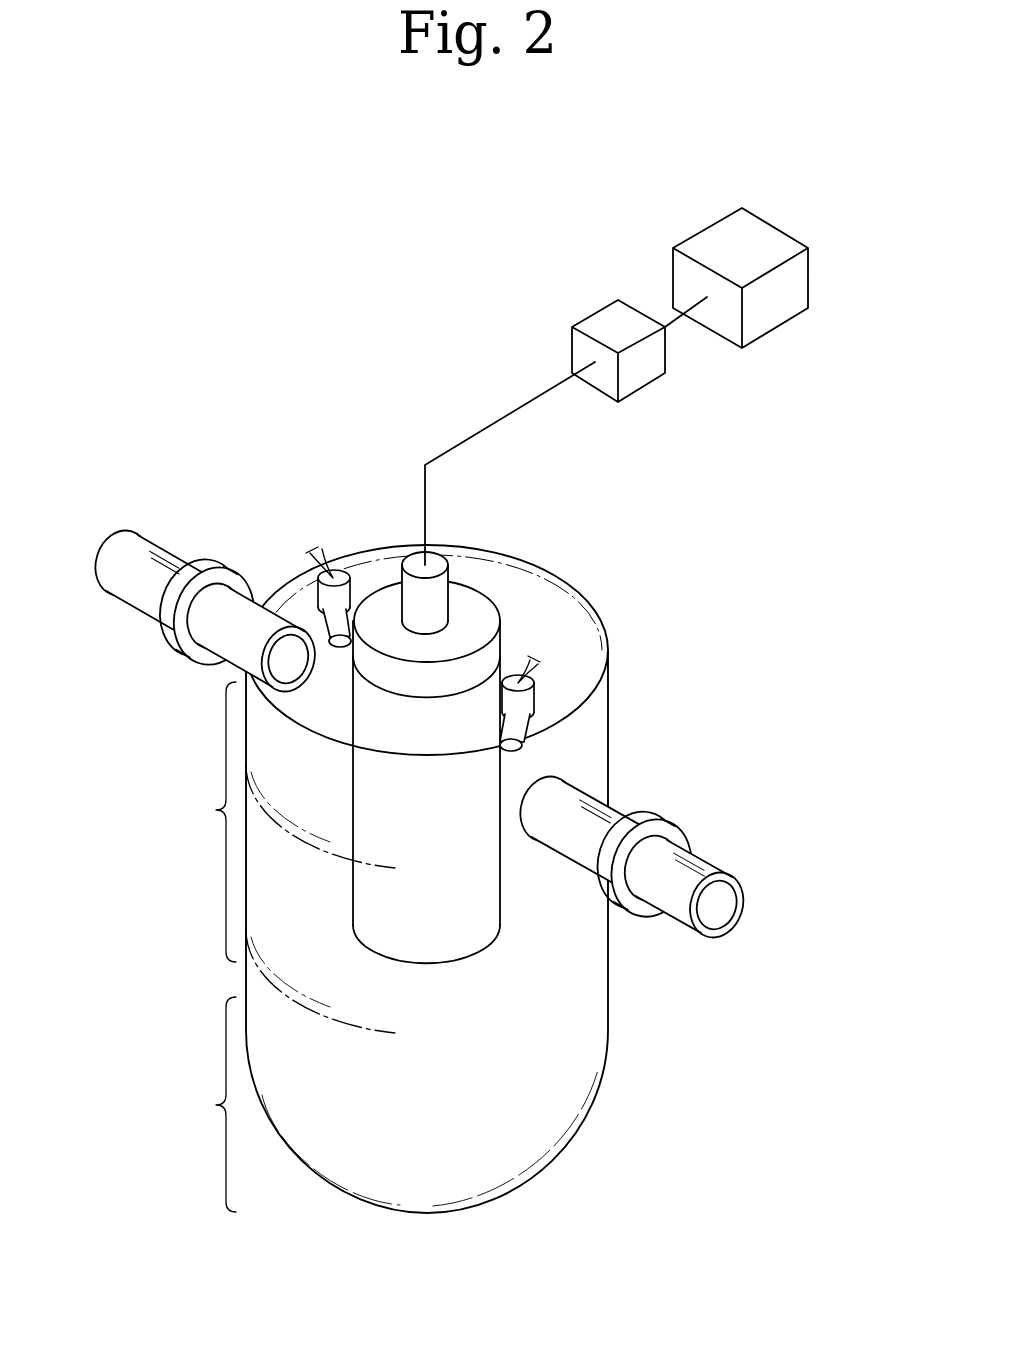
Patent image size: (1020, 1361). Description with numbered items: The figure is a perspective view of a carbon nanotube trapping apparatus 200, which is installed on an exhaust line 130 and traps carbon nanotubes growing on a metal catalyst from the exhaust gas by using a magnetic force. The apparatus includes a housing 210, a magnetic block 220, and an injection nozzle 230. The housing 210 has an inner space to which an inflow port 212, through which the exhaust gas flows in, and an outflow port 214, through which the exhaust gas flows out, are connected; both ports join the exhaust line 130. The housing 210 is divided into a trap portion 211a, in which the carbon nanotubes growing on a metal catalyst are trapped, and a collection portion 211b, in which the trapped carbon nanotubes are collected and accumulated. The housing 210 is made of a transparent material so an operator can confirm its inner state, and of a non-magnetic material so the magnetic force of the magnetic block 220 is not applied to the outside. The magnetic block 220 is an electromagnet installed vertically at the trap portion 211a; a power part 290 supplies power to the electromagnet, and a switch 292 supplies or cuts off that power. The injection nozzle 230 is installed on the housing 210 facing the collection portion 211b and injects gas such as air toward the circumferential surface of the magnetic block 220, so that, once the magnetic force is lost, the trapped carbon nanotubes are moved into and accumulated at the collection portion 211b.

The carbon nanotube trapping apparatus 200 is at (357, 317).
The housing 210 is at (618, 684).
The trap portion 211a is at (380, 753).
The collection portion 211b is at (375, 1071).
The inflow port 212 is at (233, 610).
The outflow port 214 is at (607, 822).
The magnetic block 220 is at (442, 968).
The injection nozzle 230 is at (341, 568).
The exhaust line 130 is at (419, 721).
The power part 290 is at (722, 238).
The switch 292 is at (607, 323).